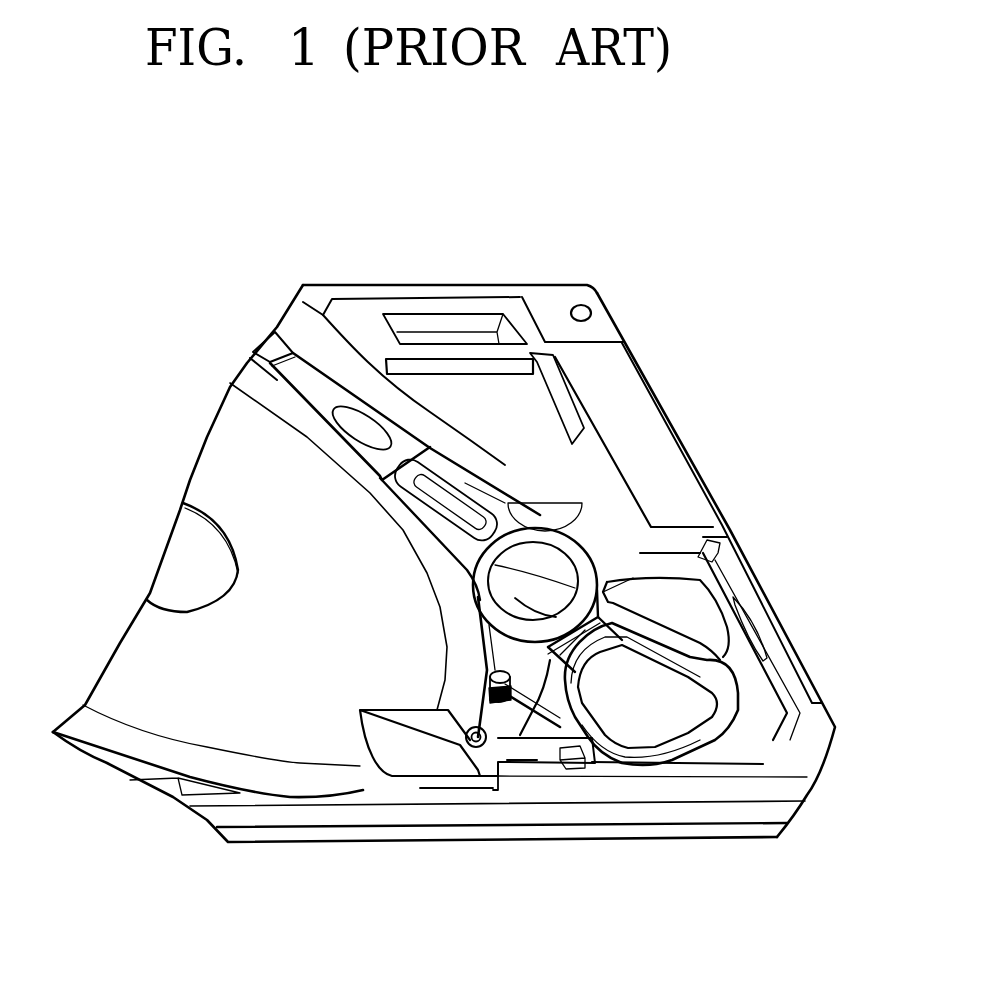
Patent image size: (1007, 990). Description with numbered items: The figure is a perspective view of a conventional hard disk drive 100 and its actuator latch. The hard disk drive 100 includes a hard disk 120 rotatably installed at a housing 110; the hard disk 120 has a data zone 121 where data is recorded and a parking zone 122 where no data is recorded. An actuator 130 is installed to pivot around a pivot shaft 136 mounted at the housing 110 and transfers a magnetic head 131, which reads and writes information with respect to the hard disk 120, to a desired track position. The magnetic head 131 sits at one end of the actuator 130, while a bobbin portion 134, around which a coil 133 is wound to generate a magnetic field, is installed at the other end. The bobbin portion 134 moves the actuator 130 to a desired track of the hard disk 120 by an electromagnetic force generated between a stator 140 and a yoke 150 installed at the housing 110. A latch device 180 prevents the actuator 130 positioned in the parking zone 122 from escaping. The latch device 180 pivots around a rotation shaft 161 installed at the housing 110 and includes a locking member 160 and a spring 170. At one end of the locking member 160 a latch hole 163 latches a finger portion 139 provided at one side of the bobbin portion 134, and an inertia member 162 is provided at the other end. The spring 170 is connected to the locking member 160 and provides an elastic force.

The hard disk drive 100 is at (637, 284).
The housing 110 is at (773, 770).
The hard disk 120 is at (108, 755).
The data zone 121 is at (218, 457).
The parking zone 122 is at (102, 723).
The actuator 130 is at (510, 527).
The magnetic head 131 is at (268, 338).
The coil 133 is at (687, 742).
The bobbin portion 134 is at (657, 637).
The pivot shaft 136 is at (590, 540).
The finger portion 139 is at (575, 767).
The stator 140 is at (707, 622).
The yoke 150 is at (765, 702).
The locking member 160 is at (379, 761).
The rotation shaft 161 is at (462, 748).
The inertia member 162 is at (398, 757).
The latch hole 163 is at (547, 762).
The spring 170 is at (458, 694).
The latch device 180 is at (439, 850).